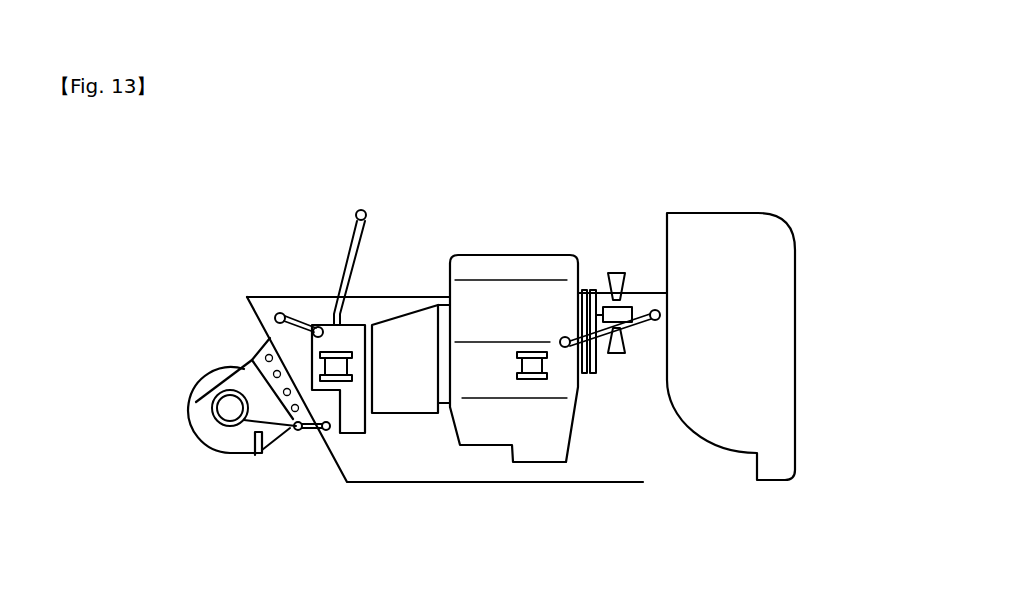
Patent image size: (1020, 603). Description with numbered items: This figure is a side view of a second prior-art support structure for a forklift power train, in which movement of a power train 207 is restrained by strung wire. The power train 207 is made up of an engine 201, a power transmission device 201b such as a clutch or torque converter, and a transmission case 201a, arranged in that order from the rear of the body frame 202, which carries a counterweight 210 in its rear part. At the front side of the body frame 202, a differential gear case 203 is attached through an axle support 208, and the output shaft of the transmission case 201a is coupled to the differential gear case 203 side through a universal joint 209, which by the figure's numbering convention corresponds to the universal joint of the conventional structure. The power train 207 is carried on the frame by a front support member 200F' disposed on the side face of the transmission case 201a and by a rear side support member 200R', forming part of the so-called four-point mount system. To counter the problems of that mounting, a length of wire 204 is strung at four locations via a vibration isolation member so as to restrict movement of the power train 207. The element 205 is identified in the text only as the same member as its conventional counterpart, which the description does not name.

The engine 201 is at (545, 278).
The transmission case 201a is at (322, 323).
The power transmission device 201b is at (407, 323).
The body frame 202 is at (613, 438).
The differential gear case 203 is at (273, 440).
The wire 204 is at (297, 318).
The unspecified member 205 is at (627, 281).
The power train 207 is at (480, 455).
The axle support 208 is at (250, 360).
The universal joint 209 is at (308, 430).
The counterweight 210 is at (745, 238).
The support member 200F' is at (355, 431).
The rear side support member 200R' is at (551, 447).